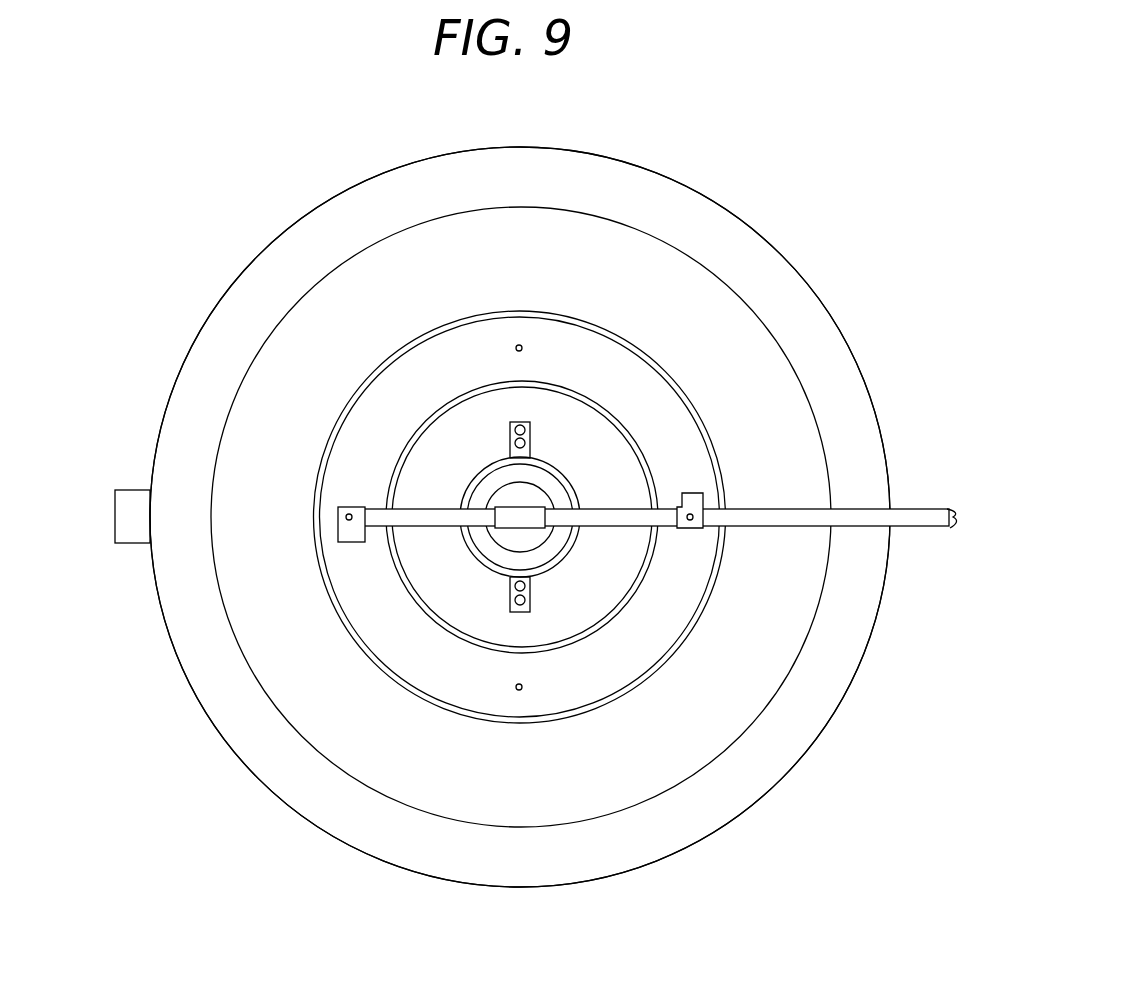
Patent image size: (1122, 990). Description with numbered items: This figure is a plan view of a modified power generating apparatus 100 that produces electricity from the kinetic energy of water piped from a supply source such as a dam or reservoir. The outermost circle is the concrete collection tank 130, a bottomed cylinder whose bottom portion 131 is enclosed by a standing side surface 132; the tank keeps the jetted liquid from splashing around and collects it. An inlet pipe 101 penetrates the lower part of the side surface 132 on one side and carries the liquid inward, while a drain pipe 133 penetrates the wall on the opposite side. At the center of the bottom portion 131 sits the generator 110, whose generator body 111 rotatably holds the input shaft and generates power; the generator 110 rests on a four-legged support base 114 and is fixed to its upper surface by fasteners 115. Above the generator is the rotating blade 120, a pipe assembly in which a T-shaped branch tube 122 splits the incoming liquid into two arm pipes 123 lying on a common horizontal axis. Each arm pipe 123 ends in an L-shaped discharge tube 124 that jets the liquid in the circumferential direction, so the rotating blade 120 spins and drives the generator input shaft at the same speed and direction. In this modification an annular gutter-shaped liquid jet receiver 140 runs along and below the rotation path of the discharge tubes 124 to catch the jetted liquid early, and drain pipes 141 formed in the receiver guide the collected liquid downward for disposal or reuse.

The power generating apparatus 100 is at (238, 157).
The inlet pipe 101 is at (797, 528).
The generator 110 is at (557, 468).
The generator body 111 is at (573, 493).
The support base 114 is at (668, 370).
The fasteners 115 is at (510, 434).
The rotating blade 120 is at (431, 530).
The branch tube 122 is at (537, 530).
The arm pipes 123 is at (423, 508).
The discharge tube 124 is at (338, 528).
The collection tank 130 is at (735, 213).
The bottom portion 131 is at (542, 273).
The side surface 132 is at (171, 395).
The drain pipe 133 is at (115, 518).
The liquid jet receiver 140 is at (350, 400).
The drain pipe 141 is at (522, 348).